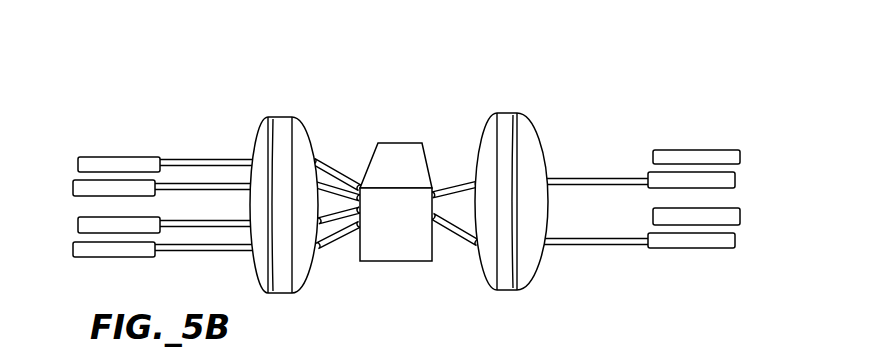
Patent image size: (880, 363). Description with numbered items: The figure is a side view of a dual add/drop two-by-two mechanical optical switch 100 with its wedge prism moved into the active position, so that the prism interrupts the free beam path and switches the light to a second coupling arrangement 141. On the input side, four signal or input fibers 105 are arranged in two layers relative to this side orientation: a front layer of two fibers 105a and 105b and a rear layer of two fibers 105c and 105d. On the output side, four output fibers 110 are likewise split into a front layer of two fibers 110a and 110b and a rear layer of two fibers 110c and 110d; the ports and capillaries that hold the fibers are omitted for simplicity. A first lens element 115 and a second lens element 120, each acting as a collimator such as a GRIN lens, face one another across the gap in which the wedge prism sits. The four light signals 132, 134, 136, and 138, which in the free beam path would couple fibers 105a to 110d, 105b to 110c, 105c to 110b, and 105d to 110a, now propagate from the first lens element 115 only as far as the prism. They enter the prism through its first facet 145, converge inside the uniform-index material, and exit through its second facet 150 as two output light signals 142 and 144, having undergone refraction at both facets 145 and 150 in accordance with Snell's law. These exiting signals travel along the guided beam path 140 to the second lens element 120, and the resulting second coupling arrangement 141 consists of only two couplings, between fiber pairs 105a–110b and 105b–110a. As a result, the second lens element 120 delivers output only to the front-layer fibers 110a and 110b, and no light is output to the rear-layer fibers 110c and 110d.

The switch 100 is at (385, 193).
The input fibers 105 is at (139, 196).
The input fiber 105a is at (82, 190).
The input fiber 105b is at (83, 253).
The input fiber 105c is at (95, 162).
The input fiber 105d is at (87, 223).
The output fibers 110 is at (646, 174).
The output fiber 110a is at (653, 177).
The output fiber 110b is at (703, 243).
The output fiber 110c is at (705, 157).
The output fiber 110d is at (663, 215).
The first lens element 115 is at (282, 120).
The second lens element 120 is at (508, 115).
The light signal 132 is at (343, 190).
The light signal 134 is at (323, 240).
The light signal 136 is at (320, 162).
The light signal 138 is at (337, 215).
The guided beam path 140 is at (424, 258).
The second coupling arrangement 141 is at (402, 274).
The light signal 142 is at (440, 185).
The light signal 144 is at (478, 245).
The first facet 145 is at (370, 145).
The second facet 150 is at (454, 157).